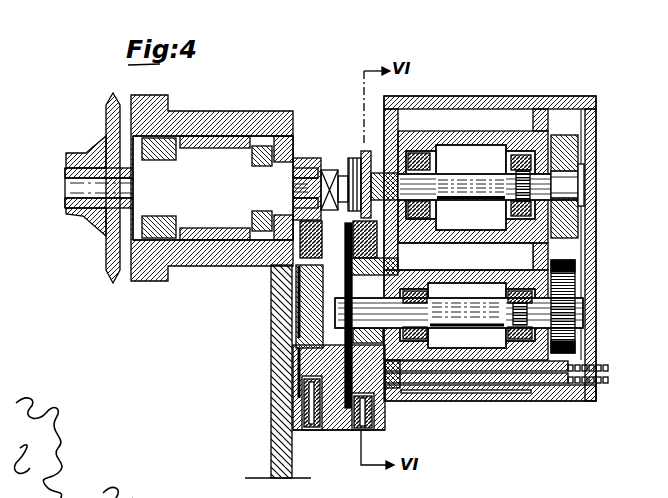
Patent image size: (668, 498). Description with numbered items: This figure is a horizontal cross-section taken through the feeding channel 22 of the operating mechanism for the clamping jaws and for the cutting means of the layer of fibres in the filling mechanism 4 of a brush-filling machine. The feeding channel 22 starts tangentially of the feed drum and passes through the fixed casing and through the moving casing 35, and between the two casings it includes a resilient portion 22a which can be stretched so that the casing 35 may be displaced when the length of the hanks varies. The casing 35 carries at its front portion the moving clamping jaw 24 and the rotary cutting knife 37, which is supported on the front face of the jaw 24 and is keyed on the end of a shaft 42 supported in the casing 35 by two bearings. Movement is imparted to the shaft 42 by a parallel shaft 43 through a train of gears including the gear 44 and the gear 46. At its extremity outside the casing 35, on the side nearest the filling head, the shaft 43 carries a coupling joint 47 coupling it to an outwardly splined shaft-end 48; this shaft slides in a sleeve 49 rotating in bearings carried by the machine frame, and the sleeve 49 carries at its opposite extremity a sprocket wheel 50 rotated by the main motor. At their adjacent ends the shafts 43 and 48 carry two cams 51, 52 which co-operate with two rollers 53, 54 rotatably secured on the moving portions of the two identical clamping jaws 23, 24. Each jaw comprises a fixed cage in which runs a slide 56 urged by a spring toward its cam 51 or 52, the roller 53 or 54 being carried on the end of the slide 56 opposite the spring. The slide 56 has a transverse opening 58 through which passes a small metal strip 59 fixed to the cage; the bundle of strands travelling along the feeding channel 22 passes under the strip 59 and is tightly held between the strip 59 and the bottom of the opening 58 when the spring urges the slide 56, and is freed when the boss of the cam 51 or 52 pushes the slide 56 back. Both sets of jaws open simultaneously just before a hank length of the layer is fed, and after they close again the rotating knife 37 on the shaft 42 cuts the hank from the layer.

The filling mechanism 4 is at (335, 422).
The feeding channel 22 is at (467, 377).
The resilient portion 22a is at (594, 356).
The clamping jaw 23 is at (296, 421).
The moving clamping jaw 24 is at (380, 393).
The casing 35 is at (446, 90).
The rotary cutting knife 37 is at (337, 240).
The shaft 42 is at (440, 304).
The parallel shaft 43 is at (471, 173).
The gear 44 is at (571, 134).
The gear 46 is at (568, 258).
The coupling joint 47 is at (321, 162).
The splined shaft-end 48 is at (288, 122).
The sleeve 49 is at (96, 145).
The sprocket wheel 50 is at (98, 110).
The cam 51 is at (357, 143).
The cam 52 is at (300, 150).
The roller 53 is at (386, 249).
The roller 54 is at (268, 258).
The slide 56 is at (288, 298).
The transverse opening 58 is at (353, 421).
The small metal strip 59 is at (300, 343).